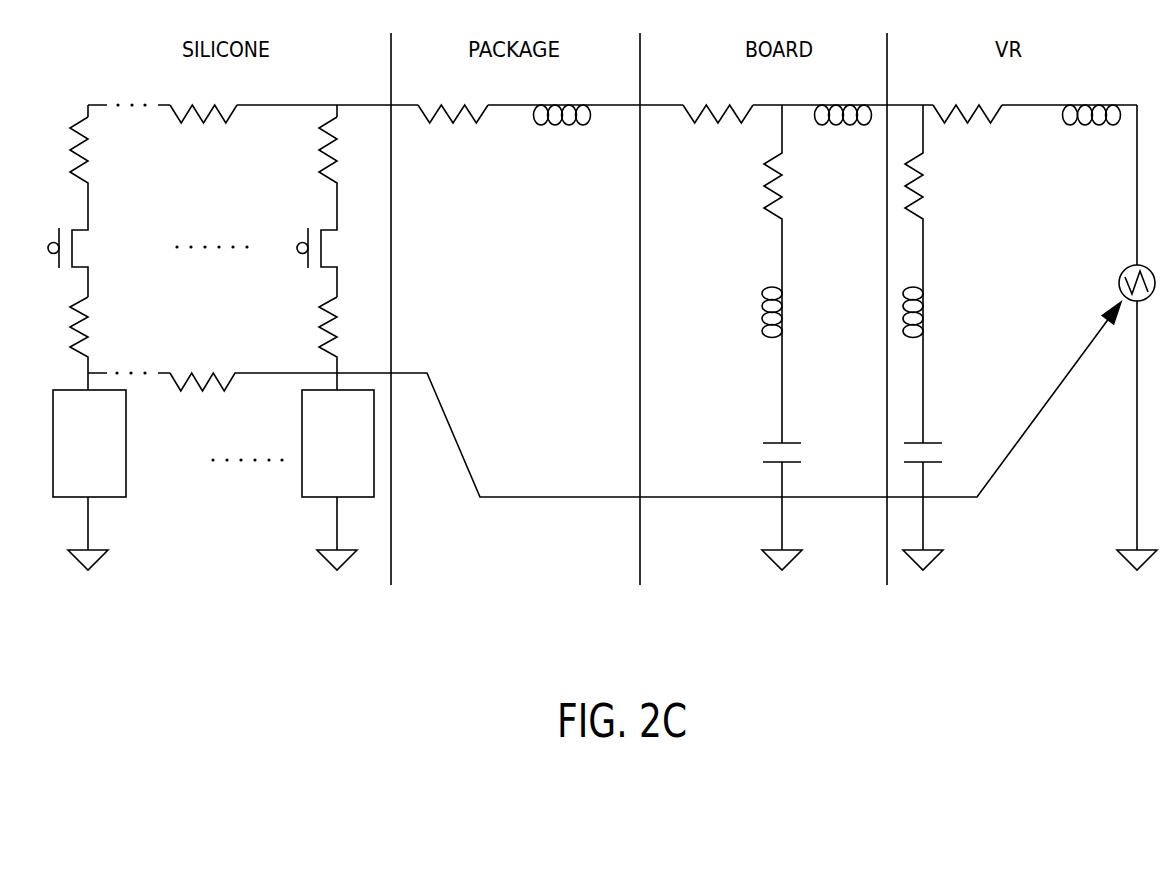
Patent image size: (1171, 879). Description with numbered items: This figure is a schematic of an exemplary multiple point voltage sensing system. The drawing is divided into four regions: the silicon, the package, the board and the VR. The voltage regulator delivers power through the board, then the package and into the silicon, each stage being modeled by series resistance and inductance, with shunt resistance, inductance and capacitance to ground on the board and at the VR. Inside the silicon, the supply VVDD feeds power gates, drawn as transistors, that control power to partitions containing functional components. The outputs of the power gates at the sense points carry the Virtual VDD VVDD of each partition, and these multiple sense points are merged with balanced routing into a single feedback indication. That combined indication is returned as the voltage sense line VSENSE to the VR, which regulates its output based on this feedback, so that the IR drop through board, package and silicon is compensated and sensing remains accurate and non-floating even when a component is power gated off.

The voltage sense VSENSE is at (515, 497).
The Virtual VDD VVDD is at (275, 217).